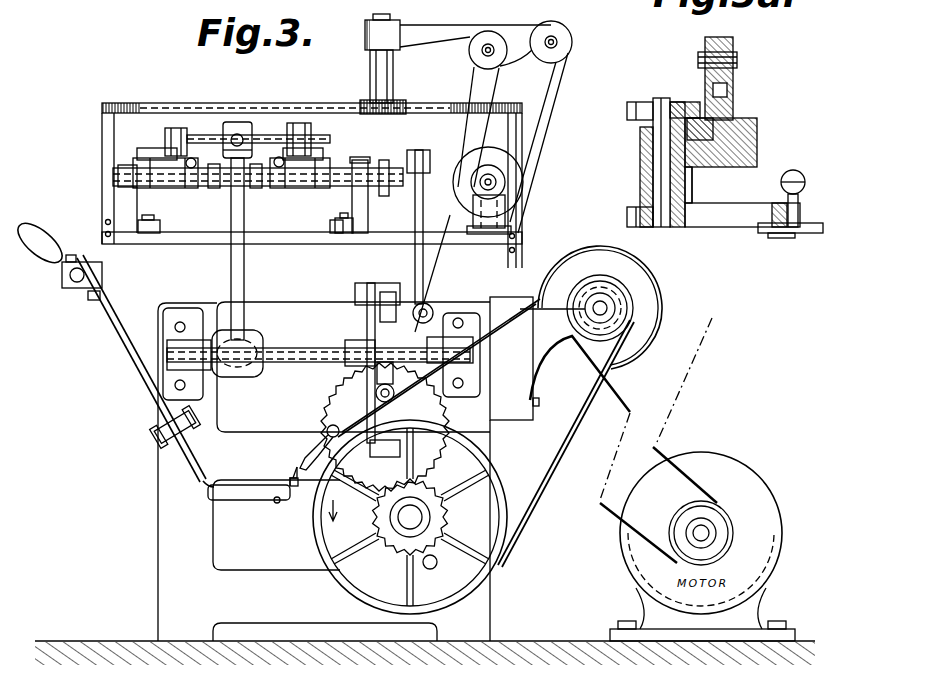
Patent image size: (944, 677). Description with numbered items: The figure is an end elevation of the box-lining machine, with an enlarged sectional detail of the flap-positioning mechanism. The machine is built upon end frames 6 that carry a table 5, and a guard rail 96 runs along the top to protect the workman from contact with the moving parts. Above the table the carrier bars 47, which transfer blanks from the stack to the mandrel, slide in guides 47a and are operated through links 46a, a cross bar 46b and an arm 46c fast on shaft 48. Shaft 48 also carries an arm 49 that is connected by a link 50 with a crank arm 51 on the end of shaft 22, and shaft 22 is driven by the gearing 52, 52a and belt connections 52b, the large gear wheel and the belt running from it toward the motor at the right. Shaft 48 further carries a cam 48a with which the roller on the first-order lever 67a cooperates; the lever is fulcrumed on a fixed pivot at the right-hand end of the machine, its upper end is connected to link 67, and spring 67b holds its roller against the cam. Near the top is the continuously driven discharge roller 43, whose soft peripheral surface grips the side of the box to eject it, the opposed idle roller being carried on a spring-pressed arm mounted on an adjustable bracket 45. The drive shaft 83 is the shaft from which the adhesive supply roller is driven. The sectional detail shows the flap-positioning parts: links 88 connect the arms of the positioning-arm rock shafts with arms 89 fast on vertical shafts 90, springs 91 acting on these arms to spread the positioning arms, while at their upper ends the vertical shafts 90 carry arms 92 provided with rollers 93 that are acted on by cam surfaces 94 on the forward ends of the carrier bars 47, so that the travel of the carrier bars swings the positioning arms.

In FIG. 3, the guard rail 96 is at (128, 103).
In FIG. 3, the links 46a is at (176, 128).
In FIG. 3A, the links 46a is at (724, 38).
In FIG. 3, the guides 47a is at (185, 148).
In FIG. 3, the cross bar 46b is at (259, 130).
In FIG. 3, the discharge roller 43 is at (372, 113).
In FIG. 3, the link 67 is at (416, 160).
In FIG. 3, the spring 67b is at (432, 200).
In FIG. 3, the lever 67a is at (428, 262).
In FIG. 3, the carrier bars 47 is at (175, 187).
In FIG. 3A, the carrier bars 47 is at (735, 123).
In FIG. 3, the table 5 is at (277, 238).
In FIG. 3, the arm 46c is at (242, 275).
In FIG. 3, the shaft 48 is at (288, 350).
In FIG. 3, the cam 48a is at (430, 325).
In FIG. 3, the arm 49 is at (367, 320).
In FIG. 3, the link 50 is at (392, 360).
In FIG. 3, the crank arm 51 is at (357, 390).
In FIG. 3, the gearing 52 is at (323, 412).
In FIG. 3, the shaft 22 is at (381, 485).
In FIG. 3, the end frames 6 is at (173, 511).
In FIG. 3, the gearing 52a is at (330, 545).
In FIG. 3, the belt connections 52b is at (547, 477).
In FIG. 3, the drive shaft 83 is at (432, 518).
In FIG. 3A, the arms 92 is at (647, 103).
In FIG. 3A, the cam surfaces 94 is at (702, 117).
In FIG. 3A, the rollers 93 is at (640, 143).
In FIG. 3A, the adjustable bracket 45 is at (735, 150).
In FIG. 3A, the springs 91 is at (804, 186).
In FIG. 3A, the vertical shafts 90 is at (672, 180).
In FIG. 3A, the arms 89 is at (733, 215).
In FIG. 3A, the links 88 is at (814, 233).